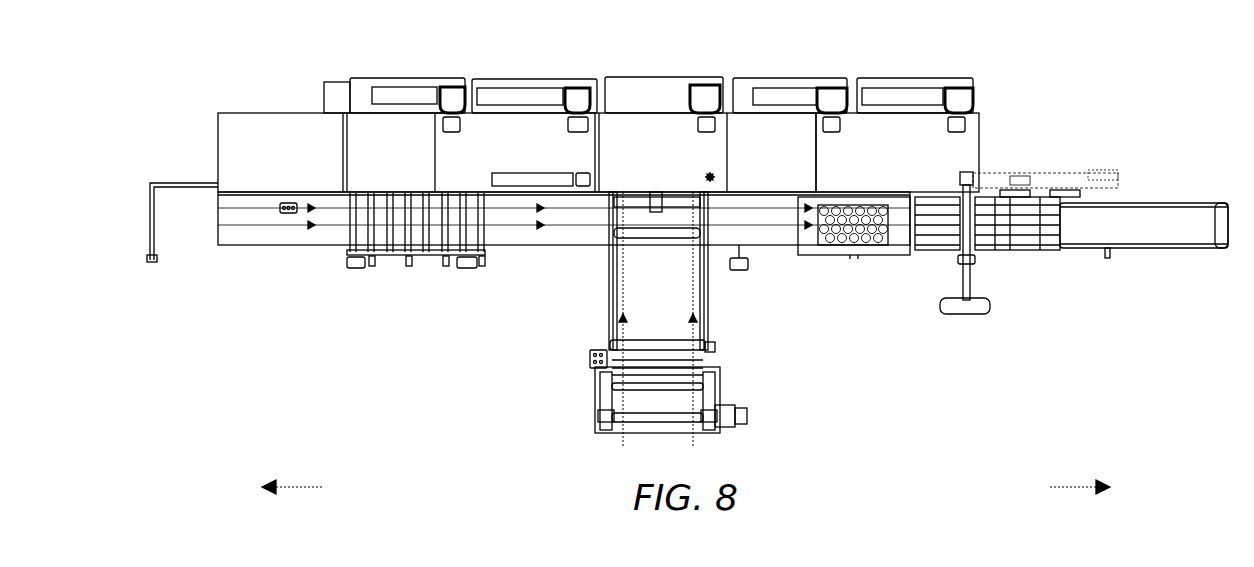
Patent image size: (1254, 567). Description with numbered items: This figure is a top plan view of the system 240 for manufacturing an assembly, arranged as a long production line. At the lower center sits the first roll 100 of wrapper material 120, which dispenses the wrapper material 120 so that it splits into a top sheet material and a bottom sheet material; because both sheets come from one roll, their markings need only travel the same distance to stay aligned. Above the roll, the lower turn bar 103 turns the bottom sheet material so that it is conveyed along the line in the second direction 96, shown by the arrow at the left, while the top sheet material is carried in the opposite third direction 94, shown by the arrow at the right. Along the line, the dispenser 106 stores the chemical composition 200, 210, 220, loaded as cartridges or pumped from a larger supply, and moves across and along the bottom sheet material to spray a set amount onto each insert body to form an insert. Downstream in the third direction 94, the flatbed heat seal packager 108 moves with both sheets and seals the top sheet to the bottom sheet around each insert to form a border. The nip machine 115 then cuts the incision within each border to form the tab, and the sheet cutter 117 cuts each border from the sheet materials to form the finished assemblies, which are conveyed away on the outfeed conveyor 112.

The system 240 is at (310, 73).
The chemical composition 200 is at (543, 173).
The chemical composition 210 is at (521, 153).
The chemical composition 220 is at (521, 162).
The dispenser 106 is at (522, 186).
The lower turn bar 103 is at (678, 243).
The first roll 100 is at (703, 433).
The wrapper material 120 is at (638, 447).
The flatbed heat seal packager 108 is at (870, 256).
The nip machine 115 is at (878, 188).
The sheet cutter 117 is at (970, 173).
The outfeed conveyor 112 is at (1143, 220).
The second direction 96 is at (305, 489).
The third direction 94 is at (1065, 489).